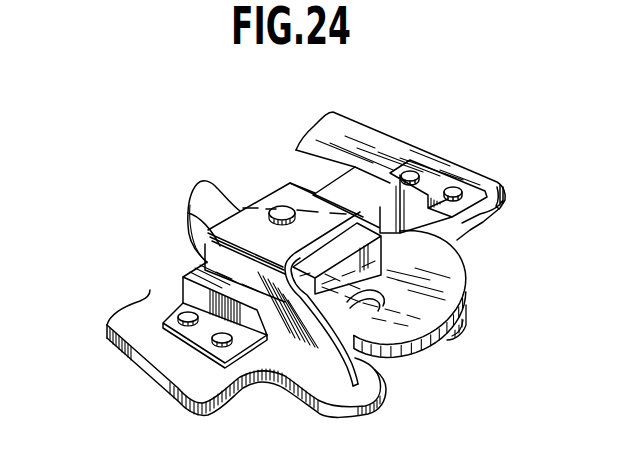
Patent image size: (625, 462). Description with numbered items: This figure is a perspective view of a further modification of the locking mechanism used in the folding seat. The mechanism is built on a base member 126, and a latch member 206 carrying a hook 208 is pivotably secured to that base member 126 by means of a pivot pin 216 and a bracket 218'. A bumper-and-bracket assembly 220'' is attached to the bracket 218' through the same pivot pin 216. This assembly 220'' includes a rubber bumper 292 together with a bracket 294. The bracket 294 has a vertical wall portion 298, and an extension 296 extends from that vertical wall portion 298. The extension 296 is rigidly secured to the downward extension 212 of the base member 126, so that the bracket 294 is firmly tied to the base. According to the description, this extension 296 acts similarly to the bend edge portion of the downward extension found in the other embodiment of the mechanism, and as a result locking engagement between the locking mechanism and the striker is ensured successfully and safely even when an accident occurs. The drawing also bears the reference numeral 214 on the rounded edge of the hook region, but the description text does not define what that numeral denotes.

The base member 126 is at (373, 138).
The latch member 206 is at (212, 197).
The hook 208 is at (440, 308).
The downward extension 212 is at (342, 387).
The ring 214 is at (467, 323).
The pivot pin 216 is at (284, 207).
The bracket 218' is at (400, 196).
The bumper-and-bracket assembly 220'' is at (284, 242).
The rubber bumper 292 is at (346, 250).
The bracket 294 is at (189, 213).
The extension 296 is at (305, 352).
The vertical wall portion 298 is at (223, 248).